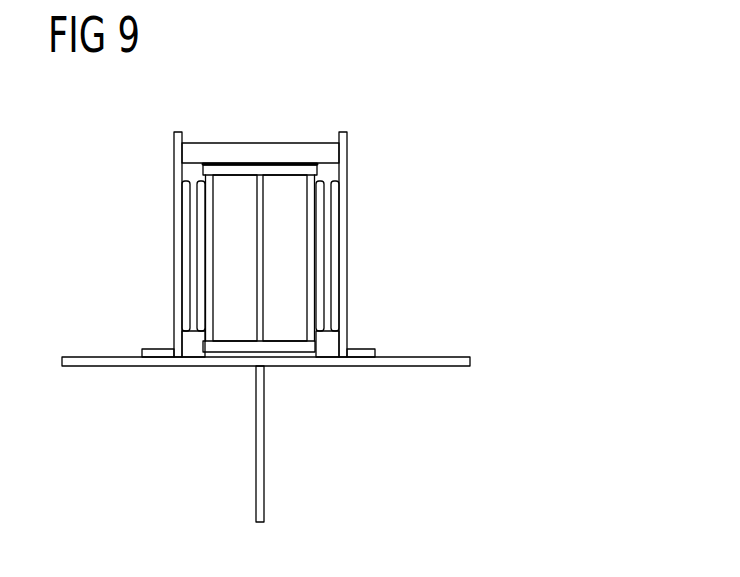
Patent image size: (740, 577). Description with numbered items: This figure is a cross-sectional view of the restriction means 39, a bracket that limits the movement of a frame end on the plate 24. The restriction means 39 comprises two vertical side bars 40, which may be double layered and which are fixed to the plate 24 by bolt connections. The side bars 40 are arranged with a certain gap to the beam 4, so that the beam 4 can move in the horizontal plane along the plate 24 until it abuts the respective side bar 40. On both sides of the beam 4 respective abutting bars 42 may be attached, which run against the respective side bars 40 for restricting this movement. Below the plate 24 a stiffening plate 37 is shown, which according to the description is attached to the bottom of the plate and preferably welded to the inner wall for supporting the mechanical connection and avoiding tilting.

The restriction means 39 is at (349, 118).
The beam 4 is at (240, 173).
The abutting bars 42 is at (197, 212).
The side bars 40 is at (177, 252).
The plate 24 is at (433, 361).
The stiffening plate 37 is at (260, 405).